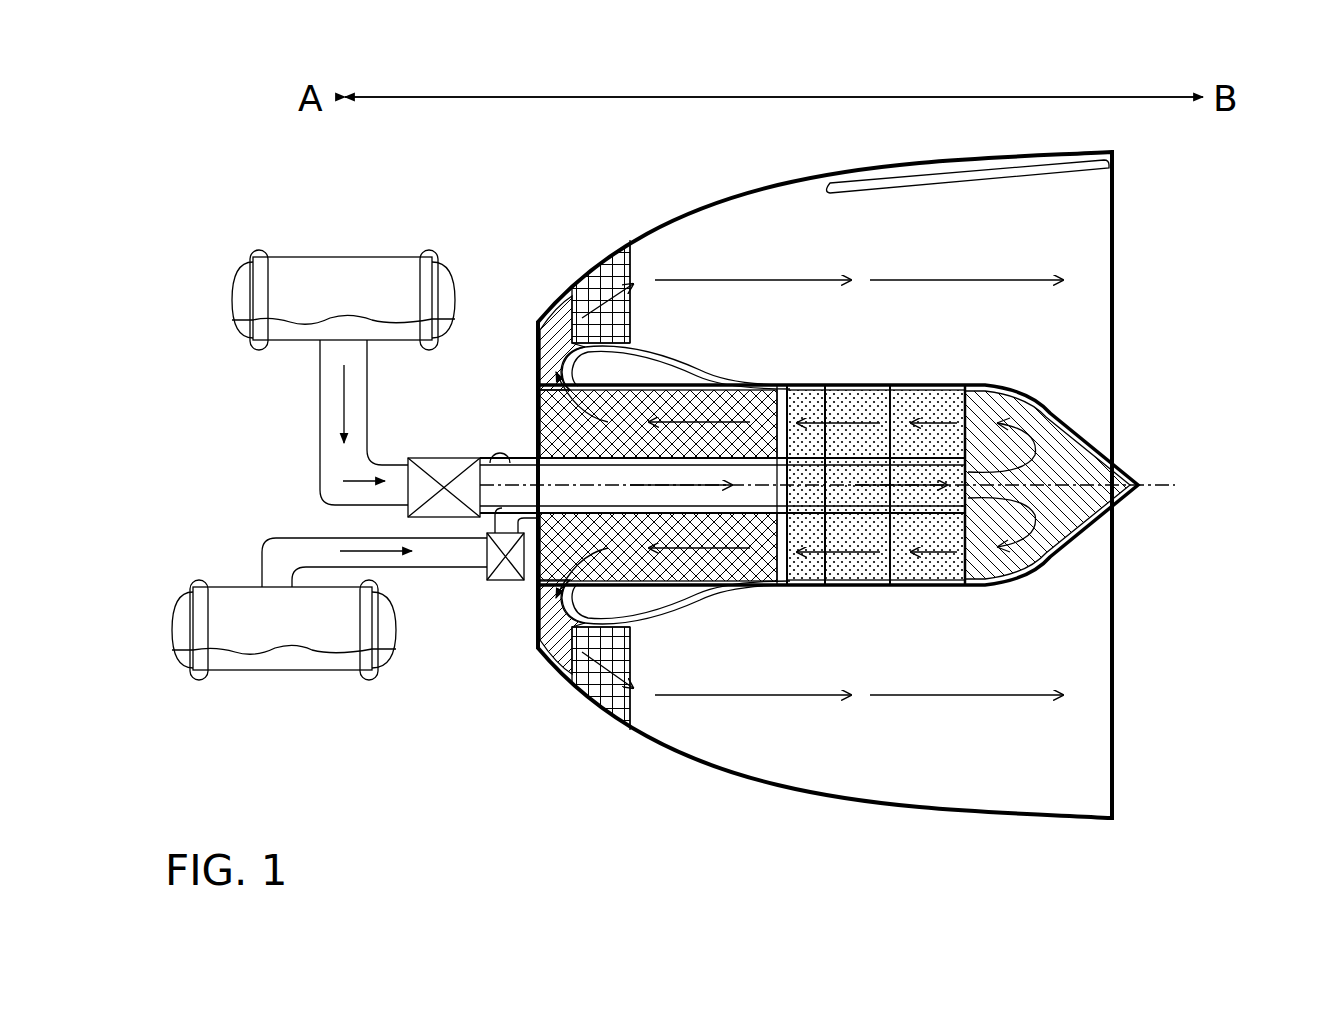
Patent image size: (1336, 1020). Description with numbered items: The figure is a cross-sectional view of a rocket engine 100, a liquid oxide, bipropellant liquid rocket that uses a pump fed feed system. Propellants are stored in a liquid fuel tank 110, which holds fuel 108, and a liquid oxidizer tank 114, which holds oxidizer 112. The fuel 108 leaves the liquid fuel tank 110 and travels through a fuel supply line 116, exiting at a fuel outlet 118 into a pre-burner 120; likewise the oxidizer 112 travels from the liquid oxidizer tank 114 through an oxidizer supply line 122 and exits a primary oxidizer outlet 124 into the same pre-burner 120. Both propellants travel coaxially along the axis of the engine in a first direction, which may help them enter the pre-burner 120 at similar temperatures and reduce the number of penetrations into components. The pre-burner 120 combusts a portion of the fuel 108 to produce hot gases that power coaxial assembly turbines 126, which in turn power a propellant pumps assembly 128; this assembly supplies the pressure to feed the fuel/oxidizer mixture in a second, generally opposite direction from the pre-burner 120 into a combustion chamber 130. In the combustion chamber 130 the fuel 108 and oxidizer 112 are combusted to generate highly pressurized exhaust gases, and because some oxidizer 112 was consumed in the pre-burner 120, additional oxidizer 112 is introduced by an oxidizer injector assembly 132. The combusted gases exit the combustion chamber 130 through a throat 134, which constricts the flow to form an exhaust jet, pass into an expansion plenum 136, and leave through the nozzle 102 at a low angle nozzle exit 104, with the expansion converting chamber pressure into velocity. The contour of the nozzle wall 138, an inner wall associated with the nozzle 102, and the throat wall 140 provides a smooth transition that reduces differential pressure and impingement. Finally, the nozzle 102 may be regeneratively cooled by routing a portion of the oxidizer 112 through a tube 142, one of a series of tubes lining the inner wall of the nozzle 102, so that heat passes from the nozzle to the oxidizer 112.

The rocket engine 100 is at (272, 153).
The nozzle 102 is at (672, 217).
The nozzle exit 104 is at (1064, 241).
The fuel 108 is at (298, 332).
The liquid fuel tank 110 is at (343, 377).
The oxidizer 112 is at (232, 660).
The liquid oxidizer tank 114 is at (356, 594).
The fuel supply line 116 is at (537, 455).
The fuel outlet 118 is at (968, 473).
The pre-burner 120 is at (1067, 460).
The oxidizer supply line 122 is at (492, 456).
The primary oxidizer outlet 124 is at (972, 515).
The coaxial assembly turbines 126 is at (909, 577).
The propellant pumps assembly 128 is at (851, 589).
The combustion chamber 130 is at (638, 394).
The oxidizer injector assembly 132 is at (780, 589).
The throat 134 is at (559, 343).
The expansion plenum 136 is at (596, 284).
The nozzle wall 138 is at (540, 628).
The throat wall 140 is at (584, 606).
The tube 142 is at (917, 170).